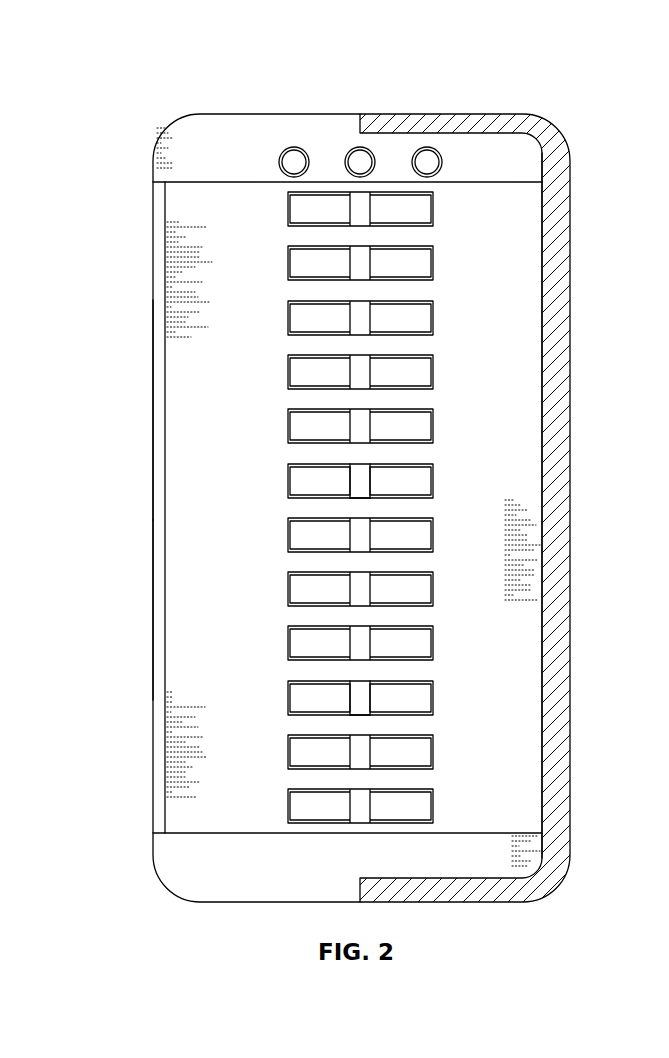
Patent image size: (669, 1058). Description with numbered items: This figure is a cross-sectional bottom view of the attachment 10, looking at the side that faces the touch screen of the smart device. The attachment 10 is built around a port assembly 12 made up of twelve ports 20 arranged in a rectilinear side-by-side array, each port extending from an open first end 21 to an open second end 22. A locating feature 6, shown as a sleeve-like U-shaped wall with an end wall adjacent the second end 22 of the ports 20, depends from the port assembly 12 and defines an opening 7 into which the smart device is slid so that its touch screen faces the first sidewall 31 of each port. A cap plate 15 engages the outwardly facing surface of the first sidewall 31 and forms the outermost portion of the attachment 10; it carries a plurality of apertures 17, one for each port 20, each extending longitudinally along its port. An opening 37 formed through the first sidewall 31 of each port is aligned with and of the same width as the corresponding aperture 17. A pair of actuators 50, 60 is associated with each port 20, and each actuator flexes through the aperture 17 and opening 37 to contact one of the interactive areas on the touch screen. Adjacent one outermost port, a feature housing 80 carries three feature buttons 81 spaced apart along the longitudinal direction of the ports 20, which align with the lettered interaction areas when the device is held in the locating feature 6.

The attachment 10 is at (174, 111).
The locating feature 6 is at (521, 123).
The opening 7 is at (522, 155).
The second end 22 is at (571, 262).
The feature housing 80 is at (198, 150).
The feature buttons 81 is at (296, 160).
The first end 21 is at (152, 262).
The ports 20 is at (152, 373).
The port assembly 12 is at (147, 510).
The cap plate 15 is at (187, 640).
The apertures 17 is at (338, 497).
The first actuator 50 is at (302, 483).
The second actuator 60 is at (407, 483).
The first sidewall 31 is at (320, 497).
The opening 37 is at (353, 496).